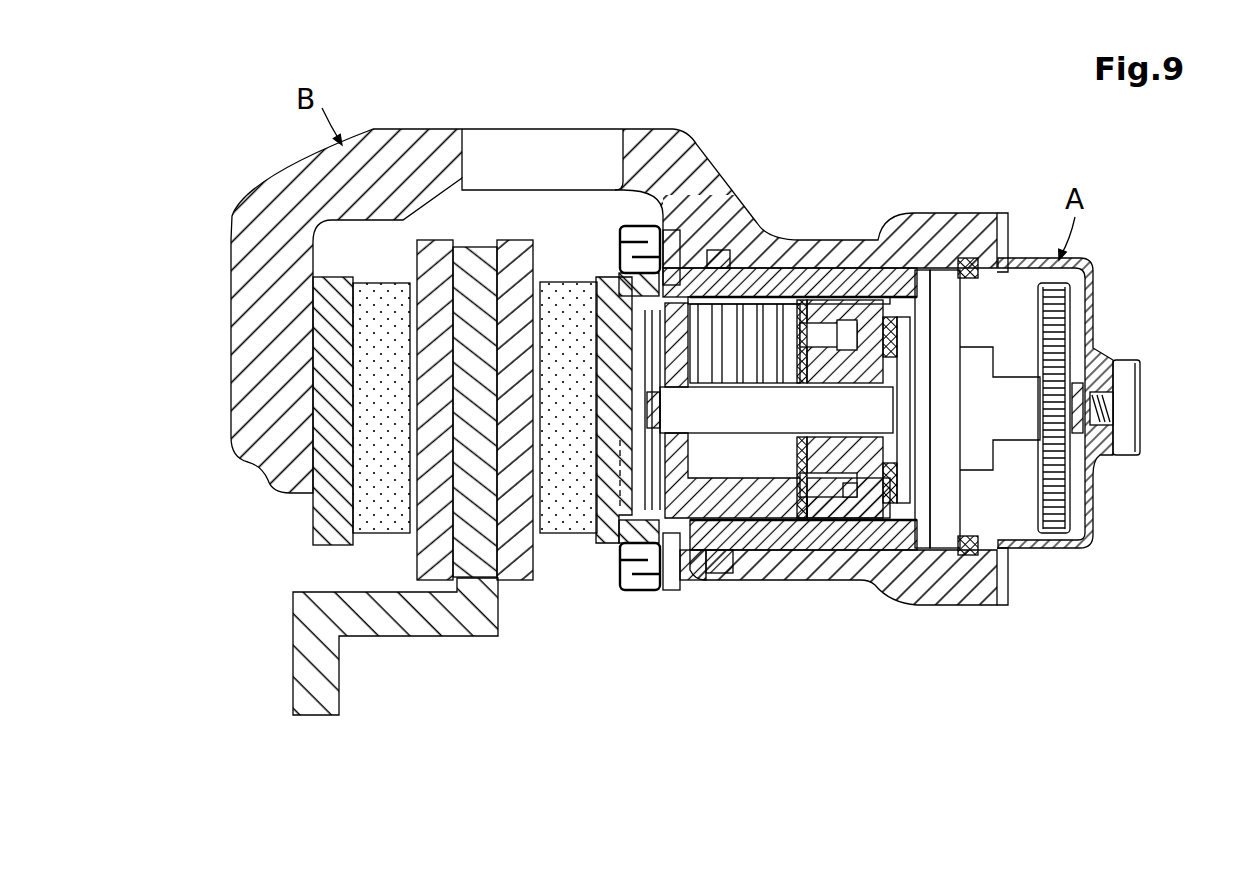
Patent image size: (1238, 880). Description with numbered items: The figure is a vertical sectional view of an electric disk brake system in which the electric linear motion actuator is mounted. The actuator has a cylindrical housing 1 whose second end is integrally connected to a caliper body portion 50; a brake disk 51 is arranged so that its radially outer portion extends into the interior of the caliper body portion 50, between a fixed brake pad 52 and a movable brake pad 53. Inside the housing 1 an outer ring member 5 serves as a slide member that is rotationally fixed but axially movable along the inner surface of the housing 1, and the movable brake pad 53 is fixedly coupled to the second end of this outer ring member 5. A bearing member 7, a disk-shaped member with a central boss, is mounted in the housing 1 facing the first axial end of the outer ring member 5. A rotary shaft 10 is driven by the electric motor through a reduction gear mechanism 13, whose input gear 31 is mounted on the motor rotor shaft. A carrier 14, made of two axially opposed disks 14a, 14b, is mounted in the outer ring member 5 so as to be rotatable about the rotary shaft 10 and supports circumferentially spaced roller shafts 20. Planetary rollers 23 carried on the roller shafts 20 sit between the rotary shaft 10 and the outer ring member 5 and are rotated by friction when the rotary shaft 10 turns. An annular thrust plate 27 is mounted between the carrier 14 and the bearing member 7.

The housing 1 is at (847, 247).
The outer ring member 5 is at (772, 273).
The bearing member 7 is at (942, 277).
The rotary shaft 10 is at (753, 467).
The reduction gear mechanism 13 is at (1076, 486).
The carrier 14 is at (700, 523).
The disk 14a is at (653, 457).
The disk 14b is at (822, 505).
The roller shaft 20 is at (820, 337).
The planetary roller 23 is at (748, 307).
The thrust plate 27 is at (867, 293).
The input gear 31 is at (1055, 517).
The caliper body portion 50 is at (270, 192).
The brake disk 51 is at (460, 612).
The fixed brake pad 52 is at (367, 512).
The movable brake pad 53 is at (570, 518).